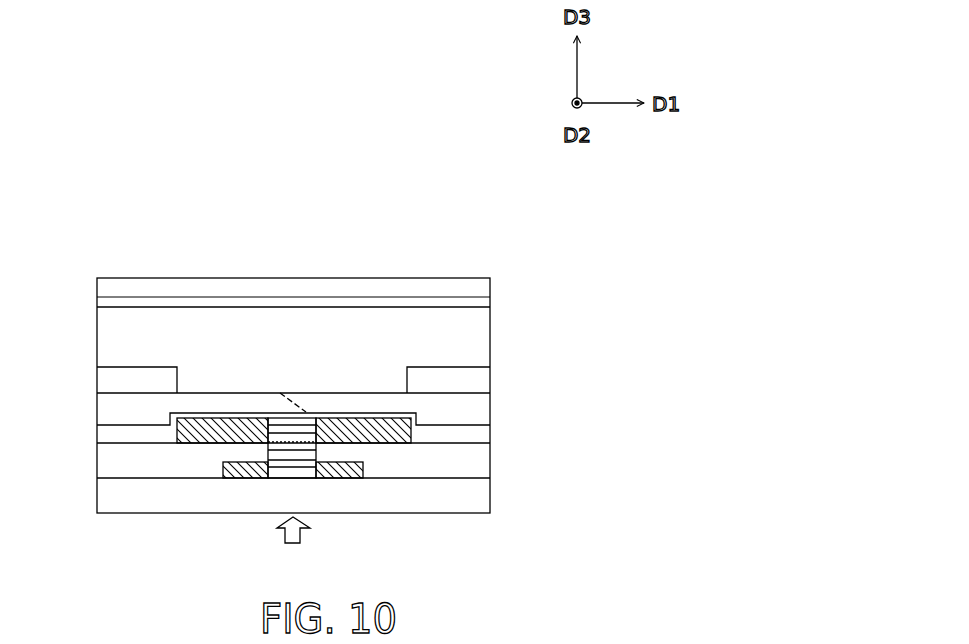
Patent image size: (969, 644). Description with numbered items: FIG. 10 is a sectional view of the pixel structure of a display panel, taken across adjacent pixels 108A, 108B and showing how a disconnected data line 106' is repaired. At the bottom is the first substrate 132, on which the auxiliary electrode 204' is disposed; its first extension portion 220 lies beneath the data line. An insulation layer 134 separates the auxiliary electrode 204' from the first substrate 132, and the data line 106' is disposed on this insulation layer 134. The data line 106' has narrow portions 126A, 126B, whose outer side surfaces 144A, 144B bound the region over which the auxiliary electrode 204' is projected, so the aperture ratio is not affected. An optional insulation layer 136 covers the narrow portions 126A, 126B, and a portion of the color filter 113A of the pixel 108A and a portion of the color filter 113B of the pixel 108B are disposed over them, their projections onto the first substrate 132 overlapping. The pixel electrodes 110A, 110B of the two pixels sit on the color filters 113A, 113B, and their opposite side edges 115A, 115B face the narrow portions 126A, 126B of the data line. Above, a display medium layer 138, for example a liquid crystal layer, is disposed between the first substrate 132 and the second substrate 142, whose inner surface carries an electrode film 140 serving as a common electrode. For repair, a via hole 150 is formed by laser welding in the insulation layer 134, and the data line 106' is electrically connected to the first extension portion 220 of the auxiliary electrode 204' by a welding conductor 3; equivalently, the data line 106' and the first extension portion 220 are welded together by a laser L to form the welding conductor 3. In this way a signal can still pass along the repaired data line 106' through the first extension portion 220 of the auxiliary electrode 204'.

The pixel 108A is at (112, 267).
The pixel 108B is at (474, 267).
The side edge 115A is at (406, 380).
The side edge 115B is at (181, 382).
The narrow portion 126A is at (227, 420).
The narrow portion 126B is at (375, 412).
The second substrate 142 is at (95, 287).
The electrode film 140 is at (489, 305).
The display medium layer 138 is at (489, 338).
The pixel electrode 110A is at (96, 378).
The pixel electrode 110B is at (489, 380).
The color filter 113A is at (97, 406).
The color filter 113B is at (489, 406).
The outer side surface 144A is at (176, 430).
The outer side surface 144B is at (413, 433).
The insulation layer 136 is at (489, 432).
The insulation layer 134 is at (489, 461).
The first substrate 132 is at (489, 497).
The via hole 150 is at (234, 466).
The welding conductor 3 is at (305, 464).
The data line 106' is at (366, 495).
The auxiliary electrode 204' is at (184, 472).
The first extension portion 220 is at (160, 478).
The laser L is at (293, 543).